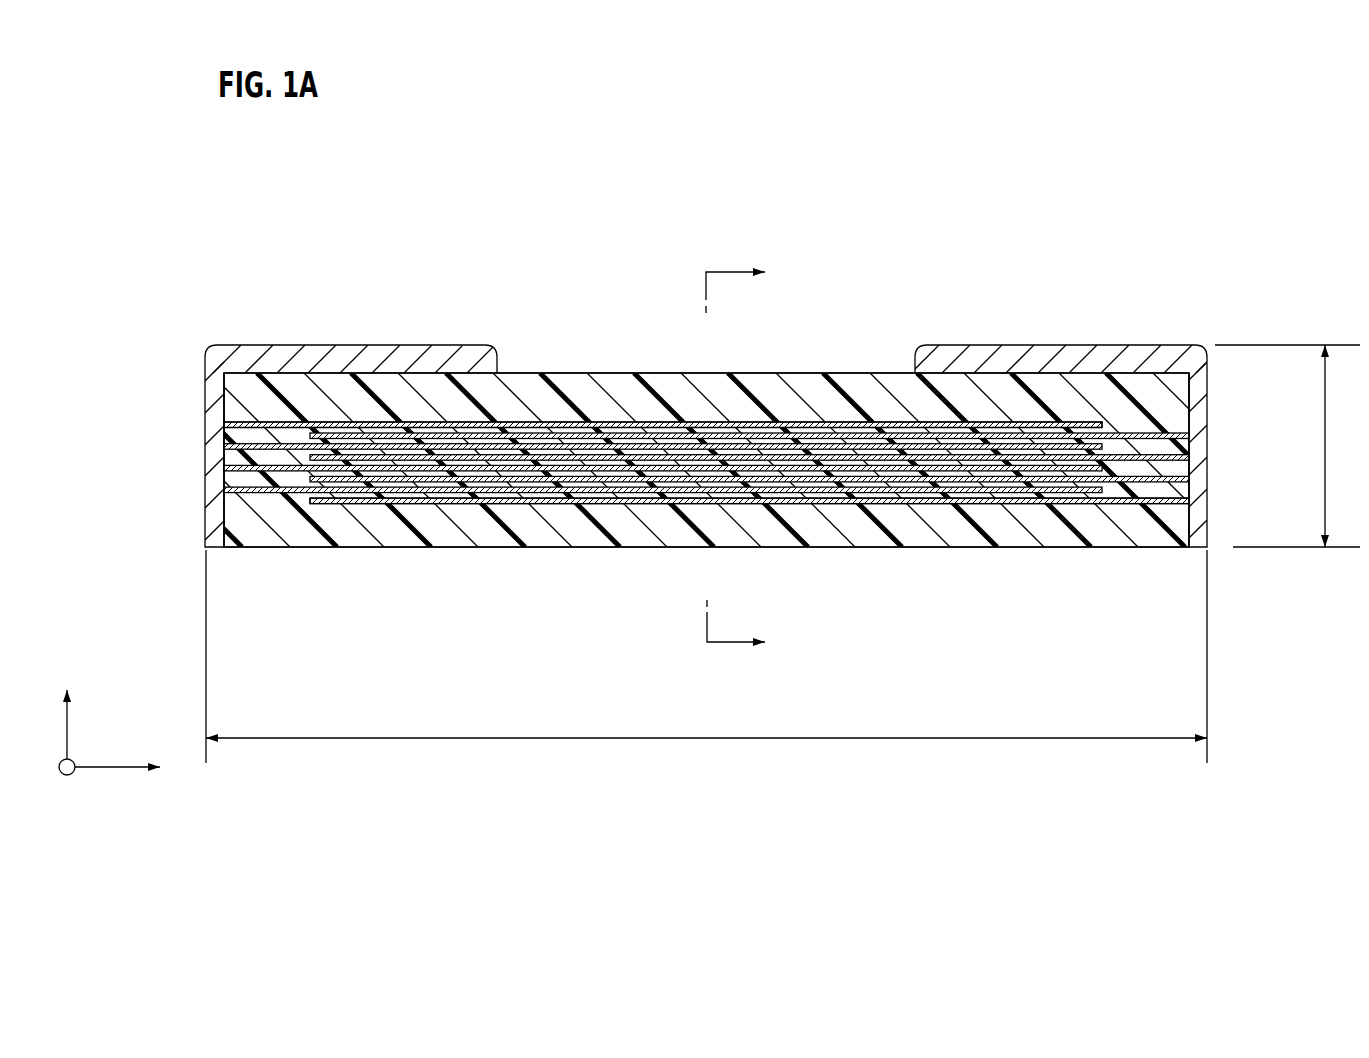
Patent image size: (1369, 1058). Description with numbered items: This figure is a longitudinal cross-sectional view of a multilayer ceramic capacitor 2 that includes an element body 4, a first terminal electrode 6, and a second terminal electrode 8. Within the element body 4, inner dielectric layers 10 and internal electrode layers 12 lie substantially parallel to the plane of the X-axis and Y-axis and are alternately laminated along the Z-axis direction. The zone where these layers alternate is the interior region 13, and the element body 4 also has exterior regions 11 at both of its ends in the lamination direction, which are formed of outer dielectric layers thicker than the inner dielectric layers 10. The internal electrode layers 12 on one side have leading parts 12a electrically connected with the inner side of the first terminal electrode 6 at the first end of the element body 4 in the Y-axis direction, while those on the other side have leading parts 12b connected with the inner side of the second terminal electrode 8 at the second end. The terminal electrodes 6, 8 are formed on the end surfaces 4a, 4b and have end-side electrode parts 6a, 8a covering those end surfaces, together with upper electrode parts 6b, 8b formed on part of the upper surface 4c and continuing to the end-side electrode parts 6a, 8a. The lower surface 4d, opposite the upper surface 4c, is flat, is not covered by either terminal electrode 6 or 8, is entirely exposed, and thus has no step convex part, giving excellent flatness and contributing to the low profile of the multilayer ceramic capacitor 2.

The multilayer ceramic capacitor 2 is at (575, 362).
The element body 4 is at (855, 385).
The end surface 4a is at (215, 522).
The end surface 4b is at (1190, 525).
The upper surface 4c is at (552, 371).
The lower surface 4d is at (1112, 547).
The first terminal electrode 6 is at (262, 345).
The end-side electrode part 6a is at (213, 438).
The upper electrode part 6b is at (363, 348).
The second terminal electrode 8 is at (1137, 352).
The end-side electrode part 8a is at (1202, 437).
The upper electrode part 8b is at (1066, 358).
The inner dielectric layers 10 is at (928, 503).
The exterior regions 11 is at (972, 402).
The internal electrode layers 12 is at (838, 503).
The leading parts 12a is at (268, 420).
The leading parts 12b is at (1168, 434).
The interior region 13 is at (655, 420).